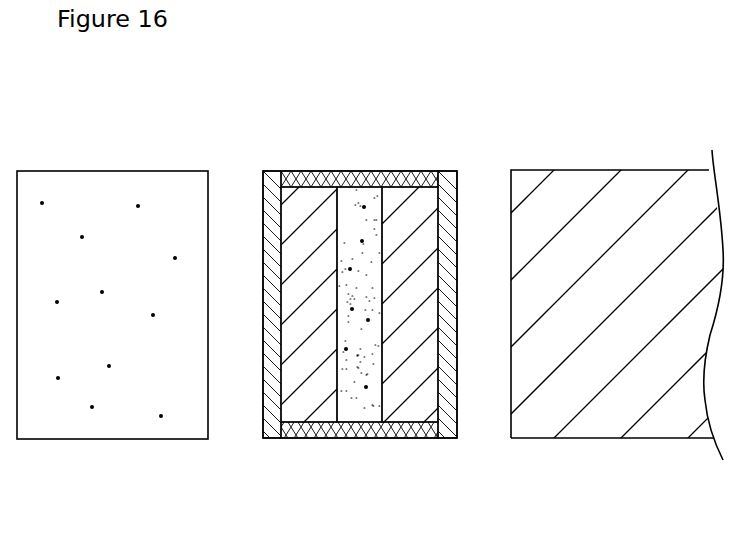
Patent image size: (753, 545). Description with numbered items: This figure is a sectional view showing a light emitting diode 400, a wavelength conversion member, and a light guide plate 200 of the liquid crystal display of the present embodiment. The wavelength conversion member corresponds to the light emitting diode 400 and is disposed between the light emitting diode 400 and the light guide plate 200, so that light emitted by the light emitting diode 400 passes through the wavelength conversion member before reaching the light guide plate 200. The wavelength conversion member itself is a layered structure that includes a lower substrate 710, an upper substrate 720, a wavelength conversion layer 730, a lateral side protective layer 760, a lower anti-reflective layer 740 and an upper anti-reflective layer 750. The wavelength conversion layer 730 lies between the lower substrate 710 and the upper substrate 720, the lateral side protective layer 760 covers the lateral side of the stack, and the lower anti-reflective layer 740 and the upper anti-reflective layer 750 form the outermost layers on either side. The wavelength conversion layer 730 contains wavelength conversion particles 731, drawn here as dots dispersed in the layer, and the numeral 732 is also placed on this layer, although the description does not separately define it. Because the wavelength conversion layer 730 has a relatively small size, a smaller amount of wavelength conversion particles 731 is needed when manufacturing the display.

The light guide plate 200 is at (608, 428).
The light emitting diode 400 is at (107, 427).
The lower substrate 710 is at (314, 403).
The upper substrate 720 is at (408, 405).
The wavelength conversion layer 730 is at (362, 356).
The wavelength conversion particles 731 is at (353, 405).
The particles 732 is at (366, 390).
The lower anti-reflective layer 740 is at (272, 430).
The upper anti-reflective layer 750 is at (447, 438).
The lateral side protective layer 760 is at (358, 170).